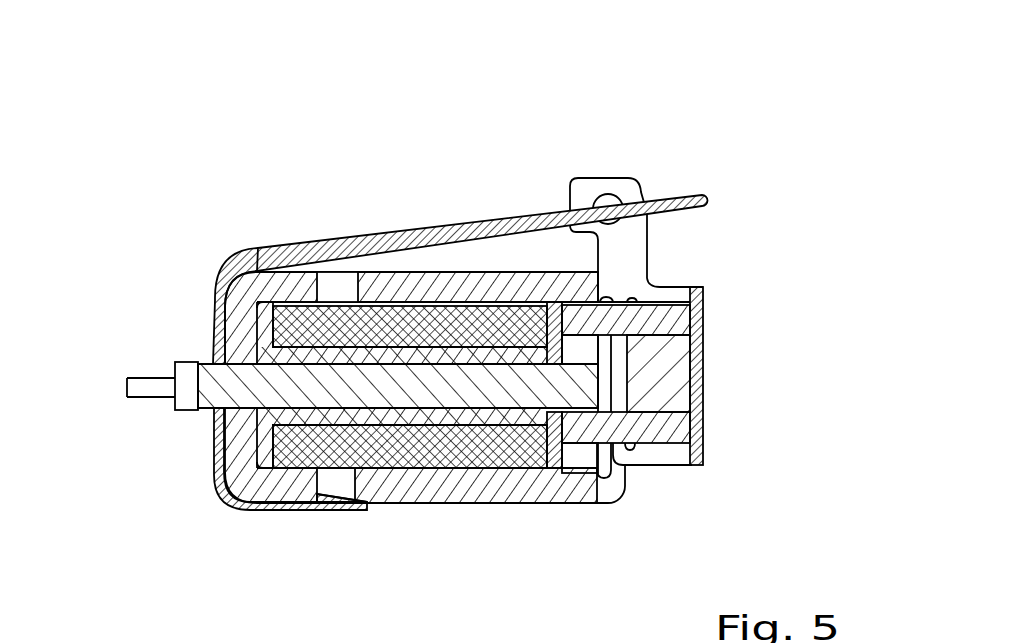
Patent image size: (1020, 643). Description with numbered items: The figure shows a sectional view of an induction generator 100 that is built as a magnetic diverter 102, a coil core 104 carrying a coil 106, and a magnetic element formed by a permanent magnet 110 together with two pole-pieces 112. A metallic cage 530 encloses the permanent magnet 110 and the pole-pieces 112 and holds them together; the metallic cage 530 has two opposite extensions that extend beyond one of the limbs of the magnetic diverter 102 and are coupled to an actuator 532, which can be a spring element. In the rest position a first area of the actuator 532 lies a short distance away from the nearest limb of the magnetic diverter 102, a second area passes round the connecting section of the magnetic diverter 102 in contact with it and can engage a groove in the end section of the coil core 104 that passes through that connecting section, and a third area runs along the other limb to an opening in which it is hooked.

The induction generator 100 is at (225, 233).
The magnetic diverter 102 is at (427, 486).
The coil core 104 is at (281, 466).
The coil 106 is at (300, 316).
The permanent magnet 110 is at (660, 377).
The pole-pieces 112 is at (583, 327).
The metallic cage 530 is at (630, 267).
The actuator 532 is at (412, 231).